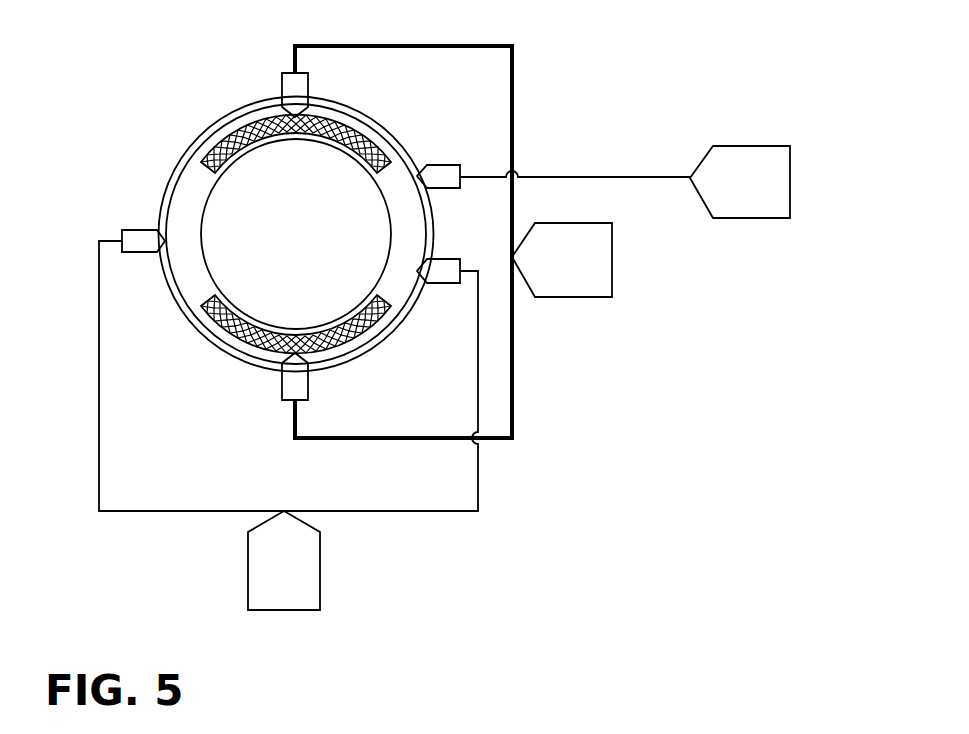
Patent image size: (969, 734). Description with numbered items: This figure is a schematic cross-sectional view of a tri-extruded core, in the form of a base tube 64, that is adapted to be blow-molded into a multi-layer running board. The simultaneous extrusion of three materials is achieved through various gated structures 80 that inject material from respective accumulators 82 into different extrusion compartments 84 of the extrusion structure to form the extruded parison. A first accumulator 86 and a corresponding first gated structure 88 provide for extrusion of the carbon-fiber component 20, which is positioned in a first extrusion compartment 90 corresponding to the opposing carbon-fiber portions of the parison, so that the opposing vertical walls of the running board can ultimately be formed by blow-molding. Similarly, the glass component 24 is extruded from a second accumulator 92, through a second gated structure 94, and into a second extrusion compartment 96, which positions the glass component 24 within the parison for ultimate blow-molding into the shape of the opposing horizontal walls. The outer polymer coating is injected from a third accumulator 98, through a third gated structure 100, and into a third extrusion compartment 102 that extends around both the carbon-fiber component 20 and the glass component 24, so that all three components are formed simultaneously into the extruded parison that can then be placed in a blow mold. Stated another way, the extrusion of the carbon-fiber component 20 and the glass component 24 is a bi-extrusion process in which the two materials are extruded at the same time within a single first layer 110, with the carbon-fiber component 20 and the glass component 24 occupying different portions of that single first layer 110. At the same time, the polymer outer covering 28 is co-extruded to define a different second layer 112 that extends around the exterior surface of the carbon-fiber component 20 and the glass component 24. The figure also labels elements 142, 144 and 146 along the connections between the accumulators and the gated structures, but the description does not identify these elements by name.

The carbon-fiber component 20 is at (237, 137).
The glass component 24 is at (240, 425).
The polymer outer covering 28 is at (213, 352).
The base tube 64 is at (254, 257).
The gated structures 80 is at (277, 62).
The accumulators 82 is at (719, 113).
The extrusion compartments 84 is at (378, 354).
The first accumulator 86 is at (543, 305).
The first gated structure 88 is at (297, 92).
The first extrusion compartment 90 is at (438, 246).
The second accumulator 92 is at (290, 616).
The second gated structure 94 is at (130, 231).
The second extrusion compartment 96 is at (194, 276).
The third accumulator 98 is at (768, 141).
The third gated structure 100 is at (440, 175).
The third extrusion compartment 102 is at (200, 120).
The single first layer 110 is at (270, 264).
The second layer 112 is at (326, 377).
The recirculation conduit 142 is at (325, 440).
The supply conduit 144 is at (98, 335).
The feed conduit 146 is at (592, 178).